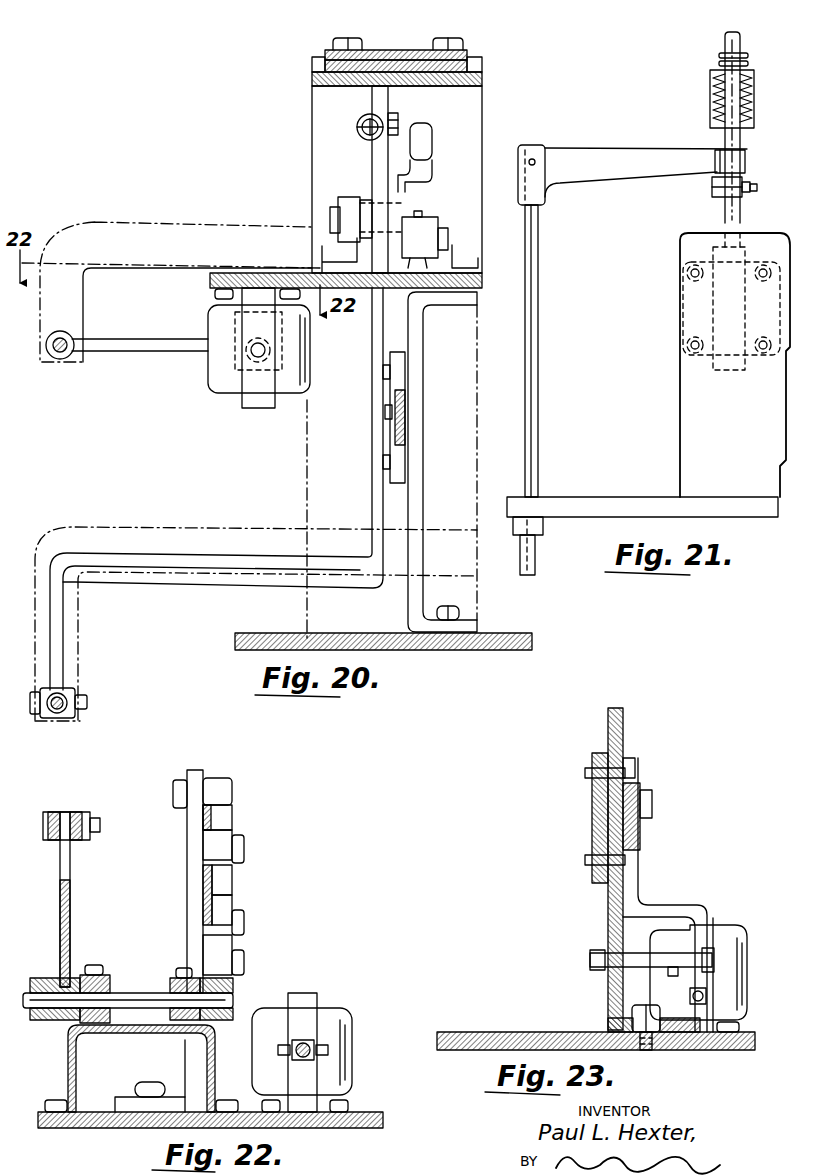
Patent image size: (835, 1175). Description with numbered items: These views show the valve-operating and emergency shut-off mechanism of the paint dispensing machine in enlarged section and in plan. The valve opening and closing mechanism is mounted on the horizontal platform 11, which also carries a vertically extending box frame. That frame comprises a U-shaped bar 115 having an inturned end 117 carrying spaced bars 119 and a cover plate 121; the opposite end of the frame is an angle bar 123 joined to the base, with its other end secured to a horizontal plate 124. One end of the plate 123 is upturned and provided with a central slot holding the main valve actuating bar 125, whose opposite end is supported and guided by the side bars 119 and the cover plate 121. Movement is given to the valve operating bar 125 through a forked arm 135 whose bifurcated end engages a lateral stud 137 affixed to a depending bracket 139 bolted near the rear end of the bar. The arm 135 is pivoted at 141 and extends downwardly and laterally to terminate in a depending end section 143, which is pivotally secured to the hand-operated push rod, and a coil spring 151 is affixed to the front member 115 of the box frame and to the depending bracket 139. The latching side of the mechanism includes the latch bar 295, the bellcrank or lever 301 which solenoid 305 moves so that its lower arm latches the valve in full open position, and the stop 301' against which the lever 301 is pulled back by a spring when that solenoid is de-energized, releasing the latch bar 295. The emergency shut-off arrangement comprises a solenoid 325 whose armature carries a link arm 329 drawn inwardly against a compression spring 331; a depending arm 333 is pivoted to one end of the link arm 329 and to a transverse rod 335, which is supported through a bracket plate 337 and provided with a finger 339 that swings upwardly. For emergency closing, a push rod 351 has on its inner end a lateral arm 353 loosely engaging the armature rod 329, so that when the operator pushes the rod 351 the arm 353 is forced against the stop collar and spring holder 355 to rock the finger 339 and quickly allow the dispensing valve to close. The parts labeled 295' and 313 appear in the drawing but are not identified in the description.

In FIG. 20, the horizontal platform 11 is at (532, 642).
In FIG. 20, the U-shaped bar 115 is at (470, 119).
In FIG. 20, the inturned end 117 is at (482, 79).
In FIG. 20, the spaced bars 119 is at (318, 63).
In FIG. 20, the cover plate 121 is at (464, 60).
In FIG. 20, the angle bar 123 is at (482, 283).
In FIG. 23, the angle bar 123 is at (623, 716).
In FIG. 20, the horizontal plate 124 is at (405, 361).
In FIG. 20, the valve actuating bar 125 is at (403, 50).
In FIG. 20, the forked arm 135 is at (376, 470).
In FIG. 20, the lateral stud 137 is at (398, 119).
In FIG. 20, the depending bracket 139 is at (372, 93).
In FIG. 20, the pivot 141 is at (384, 214).
In FIG. 20, the depending end section 143 is at (55, 664).
In FIG. 20, the coil spring 151 is at (362, 137).
In FIG. 23, the latch bar 295 is at (586, 818).
In FIG. 20, the block 295' is at (352, 414).
In FIG. 23, the bellcrank or lever 301 is at (668, 895).
In FIG. 23, the stop 301' is at (629, 948).
In FIG. 22, the solenoid 305 is at (352, 1015).
In FIG. 23, the solenoid 305 is at (736, 940).
In FIG. 22, the plate 313 is at (222, 806).
In FIG. 21, the solenoid 325 is at (680, 313).
In FIG. 21, the link arm 329 is at (725, 44).
In FIG. 22, the link arm 329 is at (75, 812).
In FIG. 21, the spring 331 is at (719, 57).
In FIG. 22, the depending arm 333 is at (70, 859).
In FIG. 22, the transverse rod 335 is at (135, 1000).
In FIG. 22, the bracket plate 337 is at (68, 1050).
In FIG. 22, the finger 339 is at (235, 1000).
In FIG. 21, the push rod 351 is at (538, 444).
In FIG. 21, the lateral arm 353 is at (596, 158).
In FIG. 21, the stop collar and spring holder 355 is at (712, 126).